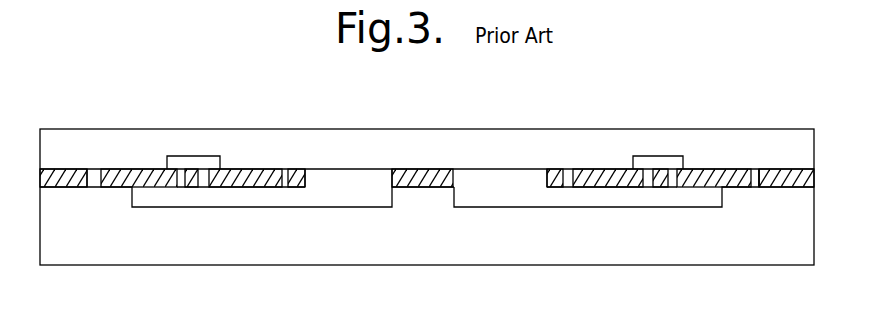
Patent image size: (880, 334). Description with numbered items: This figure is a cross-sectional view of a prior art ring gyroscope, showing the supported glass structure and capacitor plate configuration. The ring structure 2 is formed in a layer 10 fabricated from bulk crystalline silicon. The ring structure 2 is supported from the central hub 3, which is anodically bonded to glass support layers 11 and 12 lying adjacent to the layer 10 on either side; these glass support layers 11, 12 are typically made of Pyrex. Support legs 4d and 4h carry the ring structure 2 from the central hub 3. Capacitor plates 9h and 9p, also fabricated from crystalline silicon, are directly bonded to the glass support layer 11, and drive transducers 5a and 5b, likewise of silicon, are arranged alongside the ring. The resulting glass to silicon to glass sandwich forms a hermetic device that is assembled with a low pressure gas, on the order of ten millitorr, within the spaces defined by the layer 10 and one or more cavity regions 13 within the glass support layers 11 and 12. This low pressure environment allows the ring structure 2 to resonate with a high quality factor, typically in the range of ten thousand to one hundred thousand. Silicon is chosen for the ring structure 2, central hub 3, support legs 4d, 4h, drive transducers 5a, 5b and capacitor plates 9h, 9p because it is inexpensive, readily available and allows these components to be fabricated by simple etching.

The ring structure 2 is at (195, 168).
The central hub 3 is at (420, 178).
The support leg 4h is at (297, 168).
The support leg 4d is at (553, 168).
The drive transducer 5a is at (130, 168).
The drive transducer 5b is at (742, 168).
The capacitor plate 9p is at (248, 168).
The capacitor plate 9h is at (600, 168).
The layer 10 is at (790, 168).
The glass support layer 11 is at (360, 146).
The glass support layer 12 is at (748, 243).
The cavity region 13 is at (172, 168).